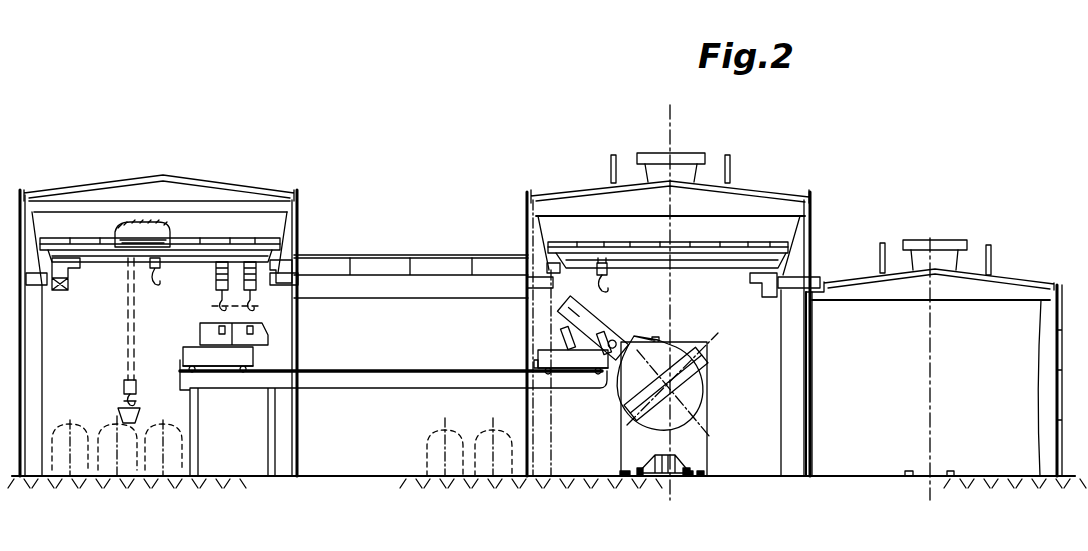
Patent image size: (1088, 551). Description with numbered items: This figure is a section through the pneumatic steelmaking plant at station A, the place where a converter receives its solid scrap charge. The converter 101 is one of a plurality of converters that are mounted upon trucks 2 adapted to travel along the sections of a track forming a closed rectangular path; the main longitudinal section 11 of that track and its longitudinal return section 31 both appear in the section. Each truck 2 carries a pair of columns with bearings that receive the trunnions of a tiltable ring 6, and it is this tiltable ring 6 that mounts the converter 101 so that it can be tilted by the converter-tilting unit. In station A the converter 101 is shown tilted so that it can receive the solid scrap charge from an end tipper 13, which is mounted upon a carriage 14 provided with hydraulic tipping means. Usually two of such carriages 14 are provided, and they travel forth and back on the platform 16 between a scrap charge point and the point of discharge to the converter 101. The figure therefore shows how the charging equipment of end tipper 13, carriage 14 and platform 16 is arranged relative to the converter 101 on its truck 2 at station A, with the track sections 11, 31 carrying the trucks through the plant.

The truck 2 is at (682, 464).
The tiltable ring 6 is at (688, 371).
The main longitudinal section 11 is at (684, 478).
The end tipper 13 is at (204, 328).
The carriage 14 is at (186, 350).
The platform 16 is at (416, 370).
The longitudinal return section 31 is at (909, 478).
The converter 101 is at (656, 360).
The station A is at (732, 406).